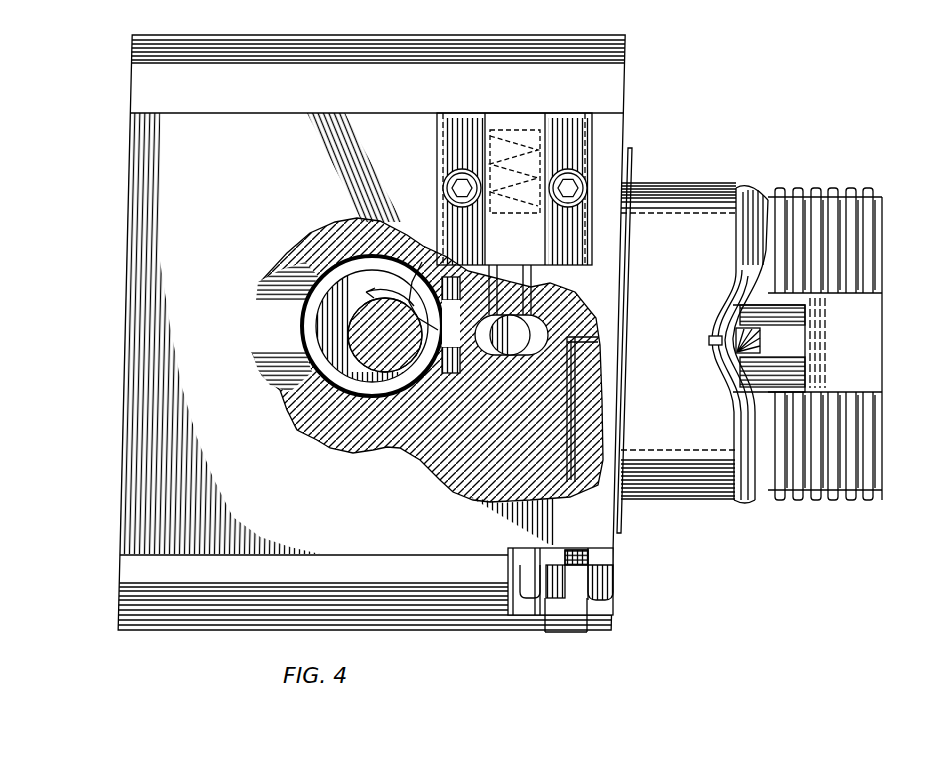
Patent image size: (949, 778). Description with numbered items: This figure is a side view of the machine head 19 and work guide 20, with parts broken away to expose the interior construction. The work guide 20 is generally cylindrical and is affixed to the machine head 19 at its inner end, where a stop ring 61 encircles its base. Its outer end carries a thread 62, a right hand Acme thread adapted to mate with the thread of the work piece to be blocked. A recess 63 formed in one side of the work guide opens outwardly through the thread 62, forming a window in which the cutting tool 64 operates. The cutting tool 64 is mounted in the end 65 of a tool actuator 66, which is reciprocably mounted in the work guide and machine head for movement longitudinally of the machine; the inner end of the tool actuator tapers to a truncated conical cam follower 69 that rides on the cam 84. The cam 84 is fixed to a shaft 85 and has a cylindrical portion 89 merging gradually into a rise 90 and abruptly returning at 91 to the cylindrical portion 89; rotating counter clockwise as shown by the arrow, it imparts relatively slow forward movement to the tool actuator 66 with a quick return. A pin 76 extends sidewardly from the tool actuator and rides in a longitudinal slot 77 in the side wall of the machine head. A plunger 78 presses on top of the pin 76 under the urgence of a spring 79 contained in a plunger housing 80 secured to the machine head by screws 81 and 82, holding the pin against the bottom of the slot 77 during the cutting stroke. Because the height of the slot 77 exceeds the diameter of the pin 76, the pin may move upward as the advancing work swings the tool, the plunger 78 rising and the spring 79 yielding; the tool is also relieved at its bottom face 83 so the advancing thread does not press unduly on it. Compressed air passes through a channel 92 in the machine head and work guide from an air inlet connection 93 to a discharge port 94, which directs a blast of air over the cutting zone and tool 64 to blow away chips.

The machine head 19 is at (148, 72).
The work guide 20 is at (712, 183).
The stop ring 61 is at (630, 165).
The thread 62 is at (815, 192).
The recess 63 is at (867, 370).
The cutting tool 64 is at (760, 333).
The end of tool actuator 65 is at (802, 320).
The tool actuator 66 is at (800, 352).
The cam follower 69 is at (438, 372).
The pin 76 is at (517, 340).
The longitudinal slot 77 is at (482, 356).
The plunger 78 is at (517, 273).
The spring 79 is at (515, 136).
The plunger housing 80 is at (505, 118).
The screw 81 is at (462, 175).
The screw 82 is at (566, 175).
The bottom face 83 is at (737, 370).
The cam 84 is at (328, 335).
The shaft 85 is at (352, 385).
The cylindrical portion 89 is at (405, 380).
The rise 90 is at (388, 275).
The return 91 is at (417, 258).
The channel 92 is at (573, 388).
The air inlet connection 93 is at (565, 632).
The discharge port 94 is at (722, 338).